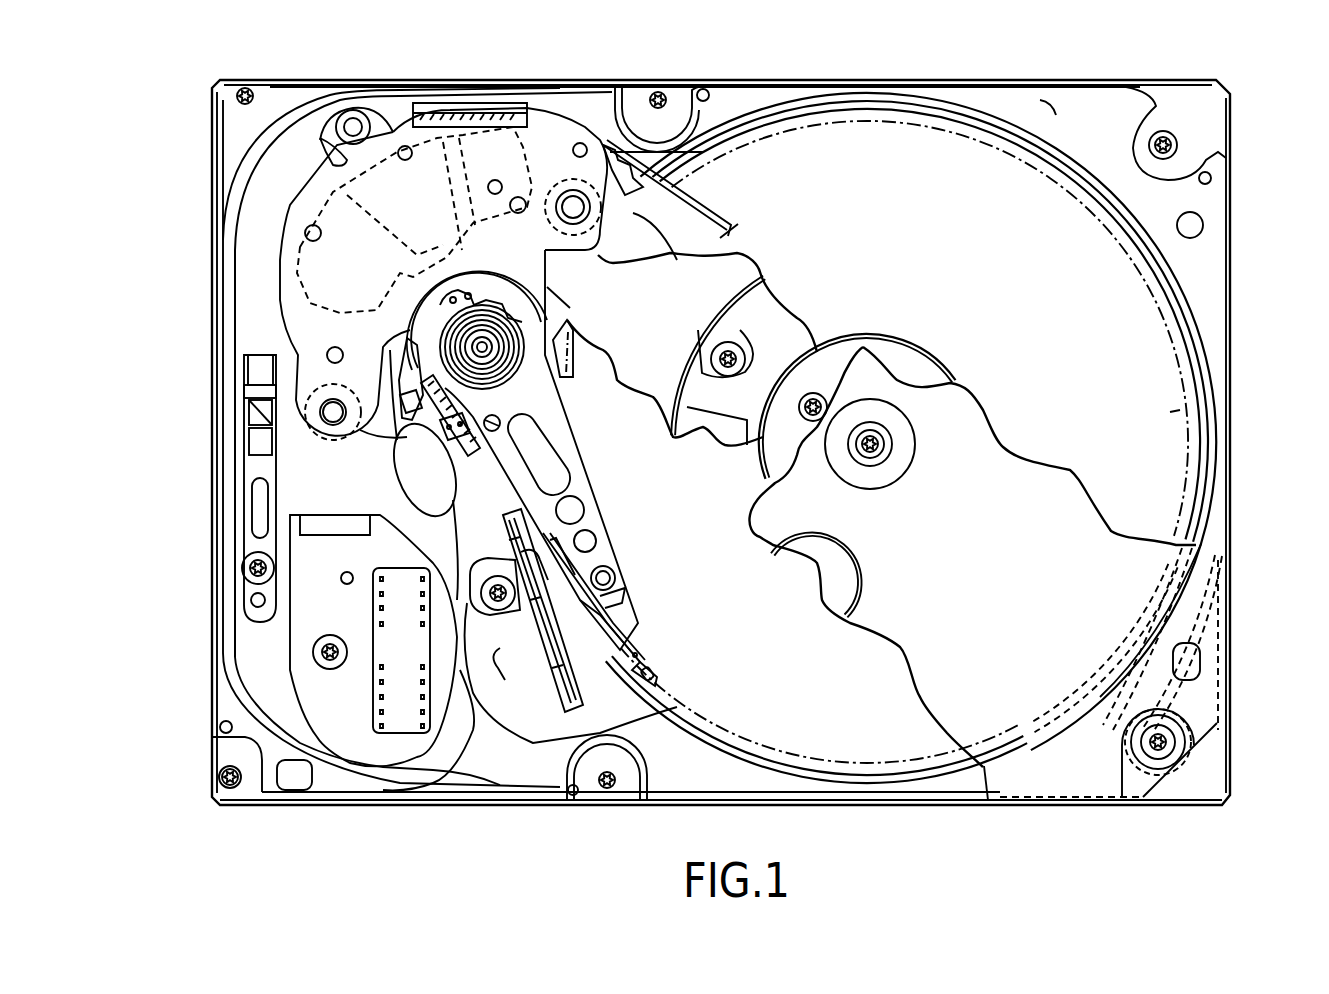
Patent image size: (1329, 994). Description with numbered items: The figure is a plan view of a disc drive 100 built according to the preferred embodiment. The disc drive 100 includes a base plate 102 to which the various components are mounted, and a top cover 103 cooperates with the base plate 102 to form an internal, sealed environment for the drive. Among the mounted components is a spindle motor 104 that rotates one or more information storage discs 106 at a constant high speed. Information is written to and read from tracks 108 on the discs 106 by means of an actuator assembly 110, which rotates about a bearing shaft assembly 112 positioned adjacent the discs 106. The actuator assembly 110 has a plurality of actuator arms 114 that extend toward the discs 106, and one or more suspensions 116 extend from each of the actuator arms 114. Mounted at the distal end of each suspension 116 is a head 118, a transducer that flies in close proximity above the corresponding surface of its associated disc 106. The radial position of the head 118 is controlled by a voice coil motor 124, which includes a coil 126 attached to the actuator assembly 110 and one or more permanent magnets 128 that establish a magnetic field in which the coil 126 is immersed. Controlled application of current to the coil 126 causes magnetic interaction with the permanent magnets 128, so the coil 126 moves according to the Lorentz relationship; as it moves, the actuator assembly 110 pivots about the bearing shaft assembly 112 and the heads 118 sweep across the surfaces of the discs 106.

The disc drive 100 is at (472, 813).
The base plate 102 is at (216, 748).
The top cover 103 is at (1160, 548).
The spindle motor 104 is at (852, 336).
The information storage disc 106 is at (1176, 412).
The tracks 108 is at (838, 126).
The actuator assembly 110 is at (570, 293).
The bearing shaft assembly 112 is at (486, 347).
The actuator arm 114 is at (574, 488).
The suspension 116 is at (638, 614).
The head 118 is at (660, 680).
The voice coil motor 124 is at (386, 134).
The coil 126 is at (357, 236).
The permanent magnet 128 is at (291, 283).